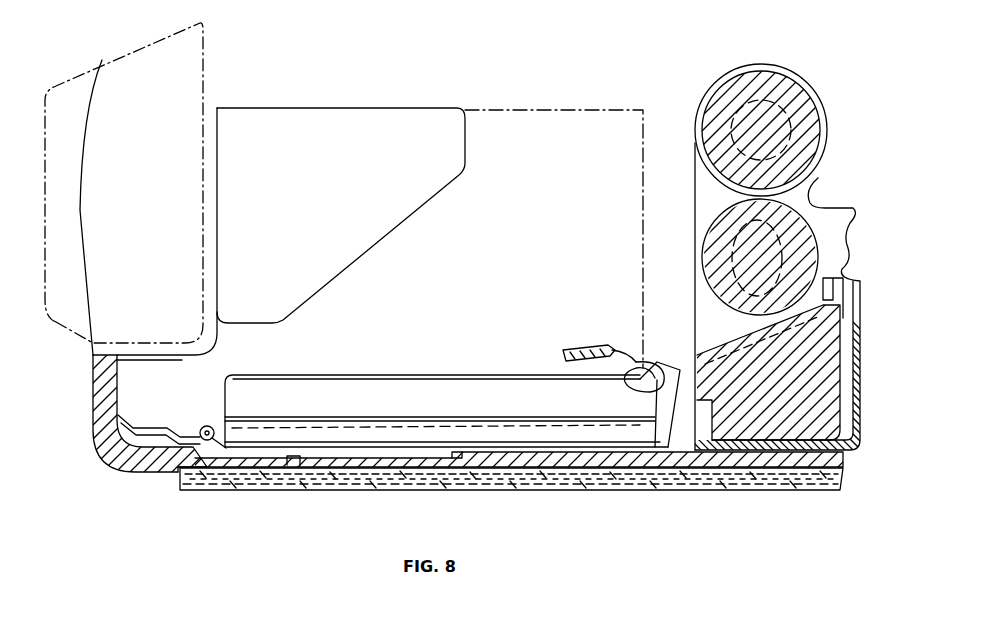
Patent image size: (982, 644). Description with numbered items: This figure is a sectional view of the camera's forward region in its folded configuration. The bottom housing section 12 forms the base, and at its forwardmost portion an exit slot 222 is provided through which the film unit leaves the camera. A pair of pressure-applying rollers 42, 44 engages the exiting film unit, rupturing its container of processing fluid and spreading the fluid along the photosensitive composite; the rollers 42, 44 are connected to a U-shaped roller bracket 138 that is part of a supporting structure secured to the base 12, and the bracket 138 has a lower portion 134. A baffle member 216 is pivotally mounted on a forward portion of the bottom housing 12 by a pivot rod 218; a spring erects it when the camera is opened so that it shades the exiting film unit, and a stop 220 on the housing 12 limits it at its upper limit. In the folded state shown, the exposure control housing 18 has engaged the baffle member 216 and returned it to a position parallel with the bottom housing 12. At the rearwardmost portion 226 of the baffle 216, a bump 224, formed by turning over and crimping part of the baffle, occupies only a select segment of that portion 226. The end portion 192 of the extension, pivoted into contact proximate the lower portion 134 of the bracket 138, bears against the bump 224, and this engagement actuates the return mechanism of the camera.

The bottom housing section 12 is at (469, 488).
The exposure control housing 18 is at (142, 208).
The pressure-applying roller 42 is at (803, 97).
The pressure-applying roller 44 is at (827, 206).
The lower portion 134 is at (697, 420).
The U-shaped roller bracket 138 is at (856, 410).
The end portion 192 is at (623, 378).
The baffle member 216 is at (426, 417).
The pivot rod 218 is at (217, 427).
The stop 220 is at (354, 121).
The exit slot 222 is at (276, 462).
The bump 224 is at (637, 388).
The rearwardmost portion 226 is at (677, 367).